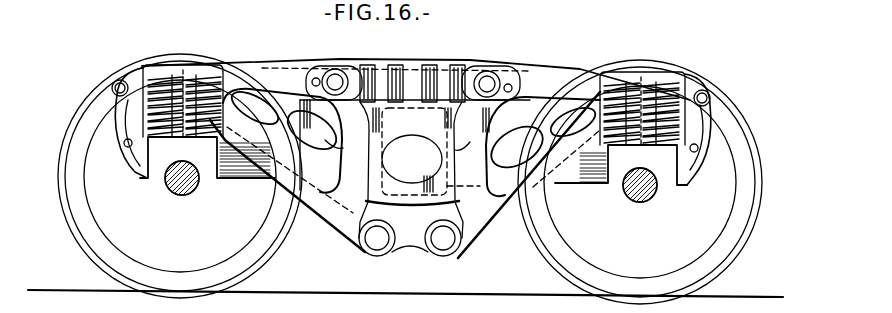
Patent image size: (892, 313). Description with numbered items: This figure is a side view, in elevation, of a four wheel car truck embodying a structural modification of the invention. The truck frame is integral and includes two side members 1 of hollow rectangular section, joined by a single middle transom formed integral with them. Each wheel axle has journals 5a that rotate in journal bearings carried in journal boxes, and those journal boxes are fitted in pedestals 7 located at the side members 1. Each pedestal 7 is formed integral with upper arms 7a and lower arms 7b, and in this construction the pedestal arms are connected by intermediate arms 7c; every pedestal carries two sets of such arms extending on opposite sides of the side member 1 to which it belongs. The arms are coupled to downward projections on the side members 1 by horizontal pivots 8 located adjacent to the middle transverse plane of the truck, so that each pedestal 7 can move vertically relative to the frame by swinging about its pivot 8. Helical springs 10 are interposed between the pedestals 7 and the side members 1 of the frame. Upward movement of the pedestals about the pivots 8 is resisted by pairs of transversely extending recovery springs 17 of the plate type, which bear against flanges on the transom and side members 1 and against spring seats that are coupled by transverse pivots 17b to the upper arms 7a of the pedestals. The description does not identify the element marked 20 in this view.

The side members 1 is at (432, 132).
The journals 5a is at (178, 193).
The pedestals 7 is at (216, 160).
The upper arms 7a is at (263, 73).
The lower arms 7b is at (312, 200).
The intermediate arms 7c is at (333, 148).
The horizontal pivots 8 is at (384, 242).
The helical springs 10 is at (162, 76).
The recovery springs 17 is at (372, 62).
The transverse pivots 17b is at (335, 72).
The bolster 20 is at (432, 106).